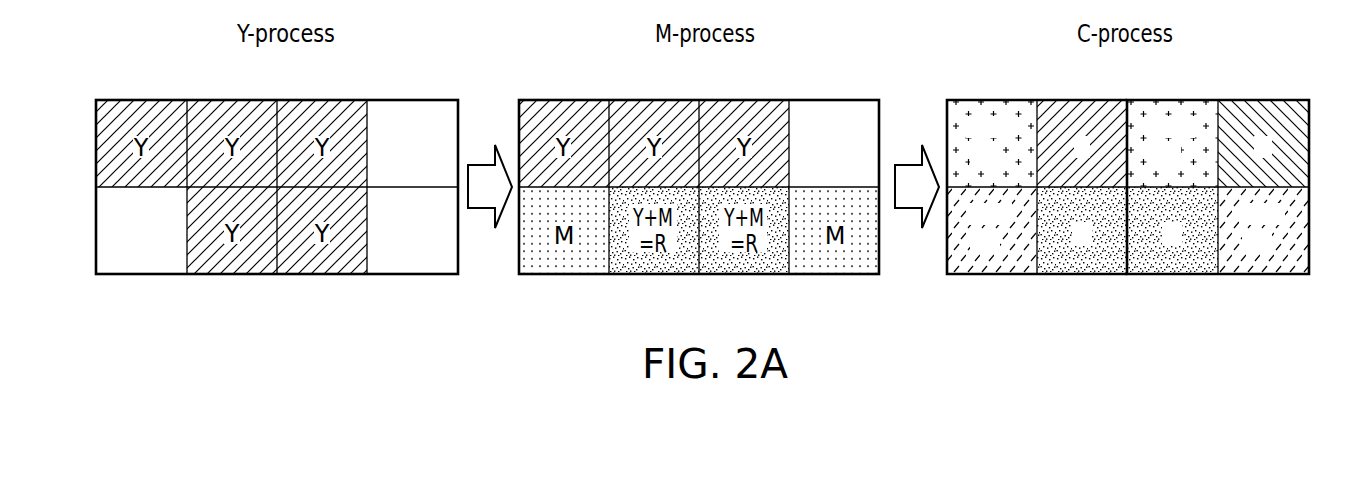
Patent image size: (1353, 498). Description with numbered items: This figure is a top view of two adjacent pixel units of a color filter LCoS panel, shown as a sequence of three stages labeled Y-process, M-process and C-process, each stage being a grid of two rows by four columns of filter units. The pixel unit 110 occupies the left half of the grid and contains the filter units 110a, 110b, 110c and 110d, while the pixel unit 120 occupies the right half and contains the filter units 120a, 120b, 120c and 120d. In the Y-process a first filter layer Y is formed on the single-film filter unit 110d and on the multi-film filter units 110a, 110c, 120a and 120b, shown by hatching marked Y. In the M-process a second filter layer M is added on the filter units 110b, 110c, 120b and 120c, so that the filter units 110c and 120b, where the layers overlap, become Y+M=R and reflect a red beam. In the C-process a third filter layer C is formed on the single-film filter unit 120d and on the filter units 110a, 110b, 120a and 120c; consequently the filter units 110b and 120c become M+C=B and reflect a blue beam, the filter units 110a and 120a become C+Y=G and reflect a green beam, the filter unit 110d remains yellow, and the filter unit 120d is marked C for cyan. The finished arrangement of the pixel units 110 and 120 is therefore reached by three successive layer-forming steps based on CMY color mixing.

The pixel unit 110 is at (1015, 189).
The filter unit 110a is at (996, 99).
The filter unit 110b is at (997, 275).
The filter unit 110c is at (1083, 275).
The filter unit 110d is at (1078, 99).
The pixel unit 120 is at (1231, 189).
The filter unit 120a is at (1174, 99).
The filter unit 120b is at (1178, 275).
The filter unit 120c is at (1270, 275).
The filter unit 120d is at (1265, 99).